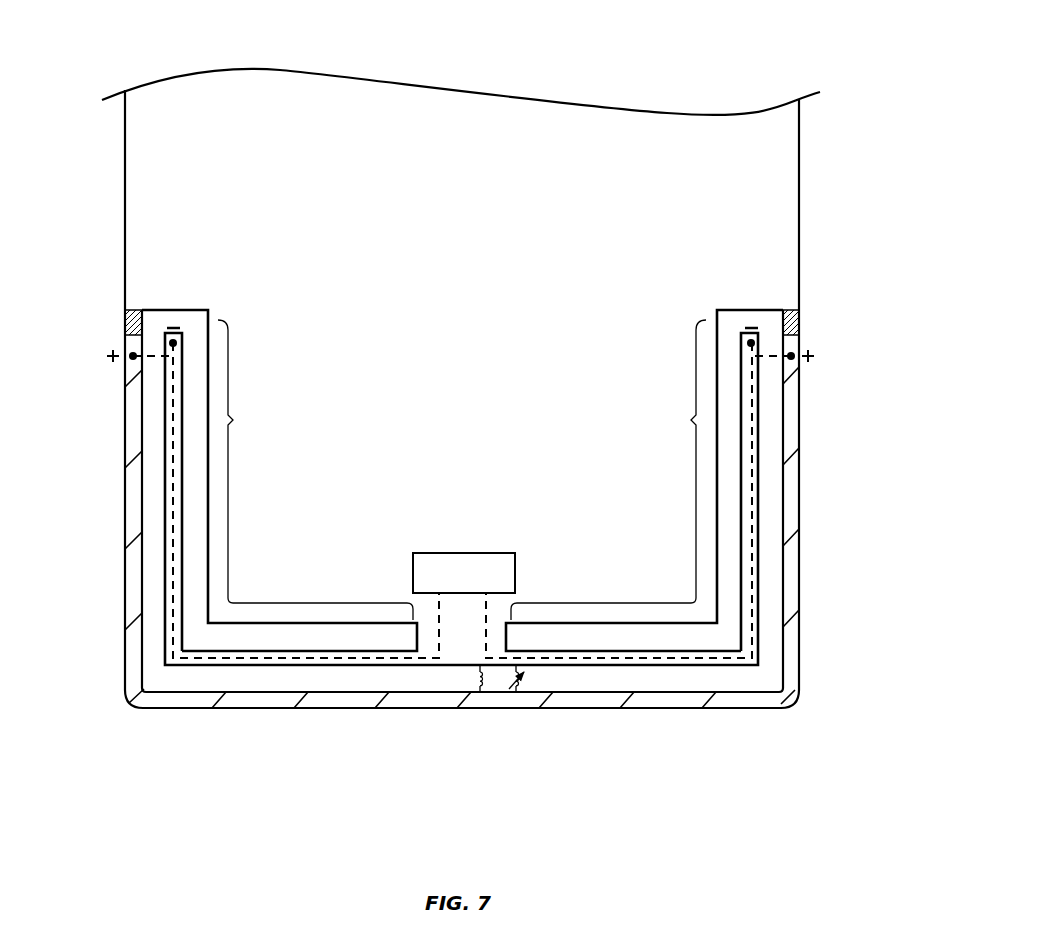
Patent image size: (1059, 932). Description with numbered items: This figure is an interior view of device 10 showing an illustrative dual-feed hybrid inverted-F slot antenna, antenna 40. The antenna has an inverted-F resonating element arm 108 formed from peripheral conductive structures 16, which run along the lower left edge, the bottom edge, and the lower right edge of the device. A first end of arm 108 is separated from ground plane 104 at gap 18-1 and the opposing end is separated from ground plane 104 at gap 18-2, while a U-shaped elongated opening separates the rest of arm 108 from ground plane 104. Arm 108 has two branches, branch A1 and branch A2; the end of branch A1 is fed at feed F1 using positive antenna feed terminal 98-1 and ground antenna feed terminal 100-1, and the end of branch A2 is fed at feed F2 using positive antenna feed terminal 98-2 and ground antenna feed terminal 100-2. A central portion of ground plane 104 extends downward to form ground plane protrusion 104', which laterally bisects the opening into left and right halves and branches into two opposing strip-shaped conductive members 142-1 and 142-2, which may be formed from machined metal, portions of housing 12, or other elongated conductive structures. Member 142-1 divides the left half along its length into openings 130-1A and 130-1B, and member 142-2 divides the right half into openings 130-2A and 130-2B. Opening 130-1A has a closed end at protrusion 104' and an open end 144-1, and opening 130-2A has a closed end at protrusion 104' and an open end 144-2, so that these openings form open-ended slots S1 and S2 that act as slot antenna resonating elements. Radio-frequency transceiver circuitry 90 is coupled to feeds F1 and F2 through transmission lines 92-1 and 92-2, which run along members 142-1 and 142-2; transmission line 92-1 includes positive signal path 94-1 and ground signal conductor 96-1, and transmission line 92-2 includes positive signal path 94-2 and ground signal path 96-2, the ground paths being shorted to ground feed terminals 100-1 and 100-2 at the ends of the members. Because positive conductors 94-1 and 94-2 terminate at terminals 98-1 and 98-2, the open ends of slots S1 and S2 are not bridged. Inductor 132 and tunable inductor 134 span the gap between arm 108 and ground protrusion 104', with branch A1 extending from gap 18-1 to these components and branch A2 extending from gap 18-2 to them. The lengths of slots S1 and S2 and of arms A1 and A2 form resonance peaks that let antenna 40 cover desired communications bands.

The device 10 is at (675, 59).
The housing 12 is at (799, 172).
The peripheral conductive structures 16 is at (168, 710).
The gap 18-1 is at (125, 315).
The gap 18-2 is at (799, 315).
The antenna 40 is at (826, 776).
The radio-frequency transceiver circuitry 90 is at (450, 553).
The transmission line 92-1 is at (352, 638).
The transmission line 92-2 is at (547, 638).
The positive signal path 94-1 is at (173, 470).
The positive signal path 94-2 is at (750, 495).
The ground signal conductor 96-1 is at (190, 503).
The ground signal path 96-2 is at (733, 461).
The positive antenna feed terminal 98-1 is at (133, 356).
The positive antenna feed terminal 98-2 is at (791, 356).
The ground antenna feed terminal 100-1 is at (173, 343).
The ground antenna feed terminal 100-2 is at (751, 343).
The ground plane 104 is at (295, 684).
The ground plane protrusion 104' is at (444, 696).
The arm 108 is at (345, 719).
The opening 130-1A is at (248, 637).
The opening 130-1B is at (238, 680).
The opening 130-2A is at (615, 637).
The opening 130-2B is at (667, 680).
The inductor 132 is at (466, 682).
The tunable inductor 134 is at (538, 683).
The conductive member 142-1 is at (163, 593).
The conductive member 142-2 is at (760, 593).
The open end 144-1 is at (195, 321).
The open end 144-2 is at (727, 321).
The antenna feed F1 is at (155, 331).
The antenna feed F2 is at (768, 331).
The open-ended slot S1 is at (251, 422).
The open-ended slot S2 is at (672, 422).
The branch A1 is at (438, 751).
The branch A2 is at (855, 349).